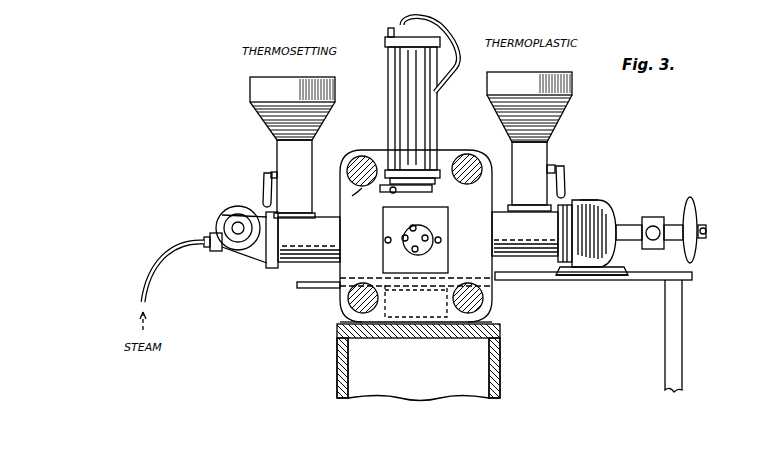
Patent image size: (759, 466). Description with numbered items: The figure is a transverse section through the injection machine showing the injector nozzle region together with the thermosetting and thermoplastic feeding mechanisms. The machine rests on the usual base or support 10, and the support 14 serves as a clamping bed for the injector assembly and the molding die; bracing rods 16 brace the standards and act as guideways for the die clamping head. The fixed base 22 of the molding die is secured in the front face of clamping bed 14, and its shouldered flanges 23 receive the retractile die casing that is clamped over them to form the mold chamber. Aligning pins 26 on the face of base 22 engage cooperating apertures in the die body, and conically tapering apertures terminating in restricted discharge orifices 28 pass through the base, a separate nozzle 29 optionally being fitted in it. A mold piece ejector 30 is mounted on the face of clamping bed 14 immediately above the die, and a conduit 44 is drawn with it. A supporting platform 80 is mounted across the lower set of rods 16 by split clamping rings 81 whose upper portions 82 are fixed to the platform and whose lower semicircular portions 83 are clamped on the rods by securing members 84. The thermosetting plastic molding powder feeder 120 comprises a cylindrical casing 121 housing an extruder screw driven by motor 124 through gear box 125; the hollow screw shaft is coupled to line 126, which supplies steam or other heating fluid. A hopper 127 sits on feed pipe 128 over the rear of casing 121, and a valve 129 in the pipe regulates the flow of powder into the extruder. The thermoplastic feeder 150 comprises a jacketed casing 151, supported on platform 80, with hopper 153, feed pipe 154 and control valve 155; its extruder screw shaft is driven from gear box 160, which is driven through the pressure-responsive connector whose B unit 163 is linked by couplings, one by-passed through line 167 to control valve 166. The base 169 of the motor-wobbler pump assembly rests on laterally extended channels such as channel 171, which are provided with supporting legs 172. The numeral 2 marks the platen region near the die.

The stationary platen 2 is at (352, 199).
The machine base 10 is at (332, 356).
The support 14 is at (333, 288).
The bracing rods 16 is at (360, 163).
The fixed base 22 is at (447, 222).
The flanges 23 is at (450, 258).
The aligning pins 26 is at (385, 241).
The discharge orifices 28 is at (409, 227).
The nozzle 29 is at (404, 245).
The mold piece ejector 30 is at (386, 115).
The hydraulic conduit 44 is at (458, 62).
The supporting platform 80 is at (294, 292).
The split clamping rings 81 is at (343, 320).
The upper portions 82 is at (416, 301).
The lower semicircular portions 83 is at (416, 304).
The securing members 84 is at (360, 338).
The thermosetting plastic molding powder feeder 120 is at (280, 277).
The cylindrical casing 121 is at (328, 240).
The motor 124 is at (232, 218).
The gear box 125 is at (234, 252).
The line 126 is at (150, 280).
The hopper 127 is at (250, 92).
The feed pipe 128 is at (310, 192).
The valve 129 is at (262, 182).
The thermoplastic feeder 150 is at (546, 237).
The jacketed casing 151 is at (503, 213).
The hopper 153 is at (527, 66).
The feed pipe 154 is at (536, 152).
The control valve 155 is at (566, 172).
The gear box 160 is at (600, 216).
The B unit 163 is at (590, 202).
The control valve 166 is at (703, 222).
The line 167 is at (651, 220).
The base 169 is at (603, 284).
The channel 171 is at (694, 277).
The supporting legs 172 is at (681, 333).